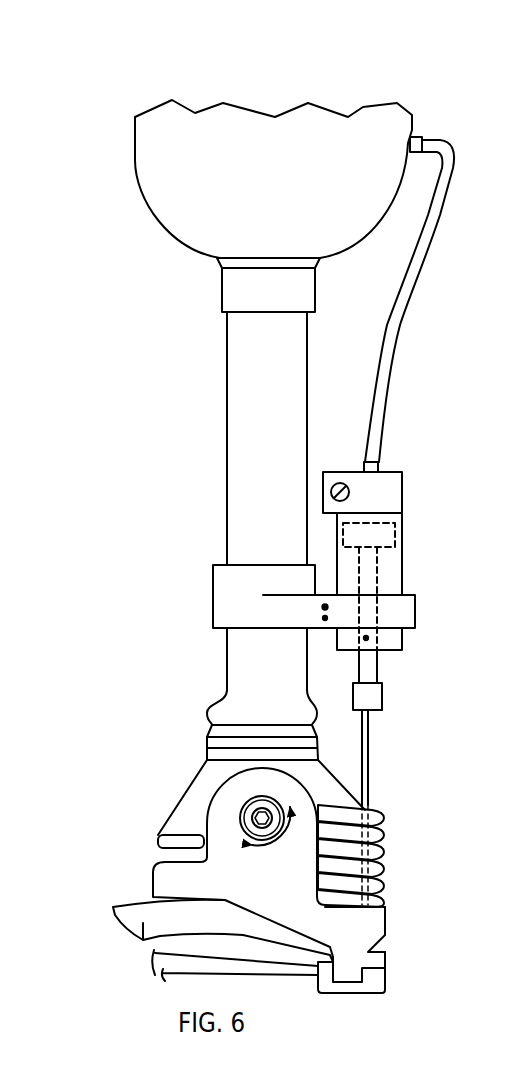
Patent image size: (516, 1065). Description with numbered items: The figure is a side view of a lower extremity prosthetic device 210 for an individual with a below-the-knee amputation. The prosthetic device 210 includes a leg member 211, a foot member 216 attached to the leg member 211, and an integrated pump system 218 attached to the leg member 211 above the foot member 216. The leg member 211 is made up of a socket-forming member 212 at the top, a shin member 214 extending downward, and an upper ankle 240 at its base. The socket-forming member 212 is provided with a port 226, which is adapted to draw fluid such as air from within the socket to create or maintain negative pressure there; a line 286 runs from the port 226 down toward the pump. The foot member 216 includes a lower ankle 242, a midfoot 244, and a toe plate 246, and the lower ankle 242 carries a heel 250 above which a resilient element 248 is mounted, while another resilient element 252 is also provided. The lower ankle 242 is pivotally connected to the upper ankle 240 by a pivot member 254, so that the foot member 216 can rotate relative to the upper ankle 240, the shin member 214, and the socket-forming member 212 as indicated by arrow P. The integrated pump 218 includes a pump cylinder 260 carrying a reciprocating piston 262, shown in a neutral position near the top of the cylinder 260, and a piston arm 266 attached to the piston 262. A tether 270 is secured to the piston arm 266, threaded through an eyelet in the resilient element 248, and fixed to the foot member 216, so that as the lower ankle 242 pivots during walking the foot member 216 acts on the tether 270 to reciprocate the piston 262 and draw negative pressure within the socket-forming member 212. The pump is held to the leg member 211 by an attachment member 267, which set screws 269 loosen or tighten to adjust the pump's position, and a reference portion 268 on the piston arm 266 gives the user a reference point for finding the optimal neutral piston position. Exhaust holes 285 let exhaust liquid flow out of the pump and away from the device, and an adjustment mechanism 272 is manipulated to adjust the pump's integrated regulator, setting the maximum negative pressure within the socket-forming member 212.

The prosthetic device 210 is at (153, 74).
The leg member 211 is at (112, 382).
The socket-forming member 212 is at (162, 218).
The shin member 214 is at (221, 412).
The foot member 216 is at (147, 808).
The integrated pump system 218 is at (407, 524).
The port 226 is at (418, 133).
The upper ankle 240 is at (196, 790).
The lower ankle 242 is at (372, 925).
The midfoot 244 is at (143, 930).
The toe plate 246 is at (273, 968).
The resilient element 248 is at (378, 853).
The heel 250 is at (378, 985).
The resilient element 252 is at (175, 855).
The pivot member 254 is at (256, 818).
The pump cylinder 260 is at (392, 573).
The piston 262 is at (405, 537).
The piston arm 266 is at (365, 673).
The attachment member 267 is at (223, 575).
The reference portion 268 is at (378, 636).
The set screws 269 is at (312, 611).
The tether 270 is at (370, 780).
The adjustment mechanism 272 is at (340, 478).
The exhaust holes 285 is at (388, 652).
The fuel tube 286 is at (400, 306).